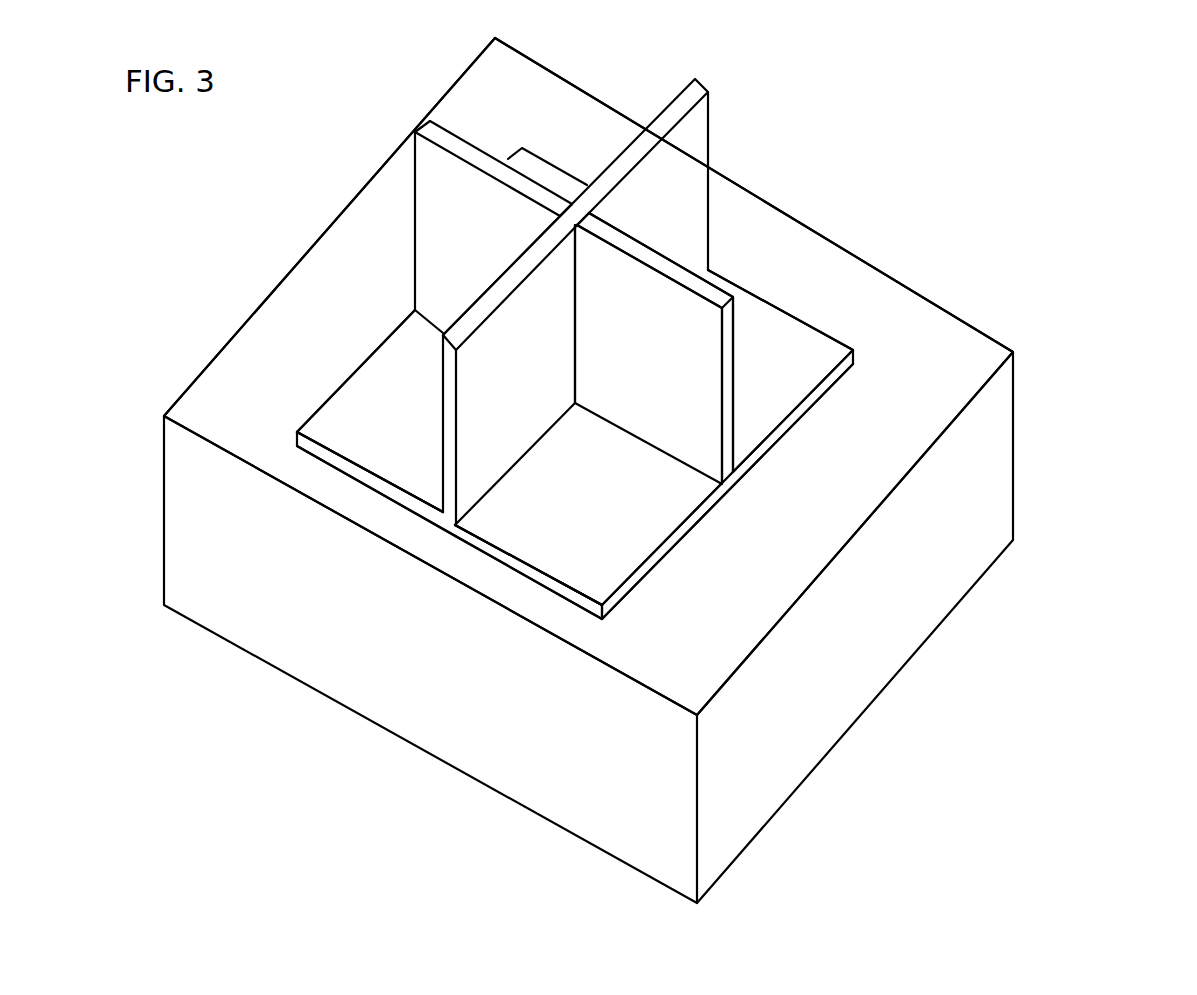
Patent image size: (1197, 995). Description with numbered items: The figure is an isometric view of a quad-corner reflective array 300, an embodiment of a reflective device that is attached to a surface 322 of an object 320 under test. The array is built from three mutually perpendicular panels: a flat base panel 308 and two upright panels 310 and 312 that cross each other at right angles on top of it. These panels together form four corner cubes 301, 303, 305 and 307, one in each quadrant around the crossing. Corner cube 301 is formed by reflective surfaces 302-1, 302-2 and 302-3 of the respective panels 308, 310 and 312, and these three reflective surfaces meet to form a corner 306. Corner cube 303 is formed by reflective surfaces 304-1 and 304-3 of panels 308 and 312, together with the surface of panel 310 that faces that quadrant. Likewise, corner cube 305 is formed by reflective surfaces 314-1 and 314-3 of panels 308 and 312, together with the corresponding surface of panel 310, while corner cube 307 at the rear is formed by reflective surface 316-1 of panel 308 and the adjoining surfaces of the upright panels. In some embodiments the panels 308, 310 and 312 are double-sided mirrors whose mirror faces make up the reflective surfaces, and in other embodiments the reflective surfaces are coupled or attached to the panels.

The quad-corner reflective array 300 is at (743, 93).
The corner cube 301 is at (625, 509).
The reflective surface 302-1 is at (586, 516).
The reflective surface 302-2 is at (534, 408).
The reflective surface 302-3 is at (664, 356).
The corner cube 303 is at (391, 381).
The reflective surface 304-1 is at (427, 423).
The reflective surface 304-3 is at (492, 246).
The corner cube 305 is at (762, 323).
The corner 306 is at (575, 407).
The corner cube 307 is at (570, 178).
The panel 308 is at (631, 594).
The panel 310 is at (642, 255).
The panel 312 is at (537, 237).
The reflective surface 314-1 is at (797, 369).
The reflective surface 314-3 is at (692, 207).
The reflective surface 316-1 is at (547, 175).
The object under test 320 is at (1037, 331).
The surface 322 is at (847, 475).